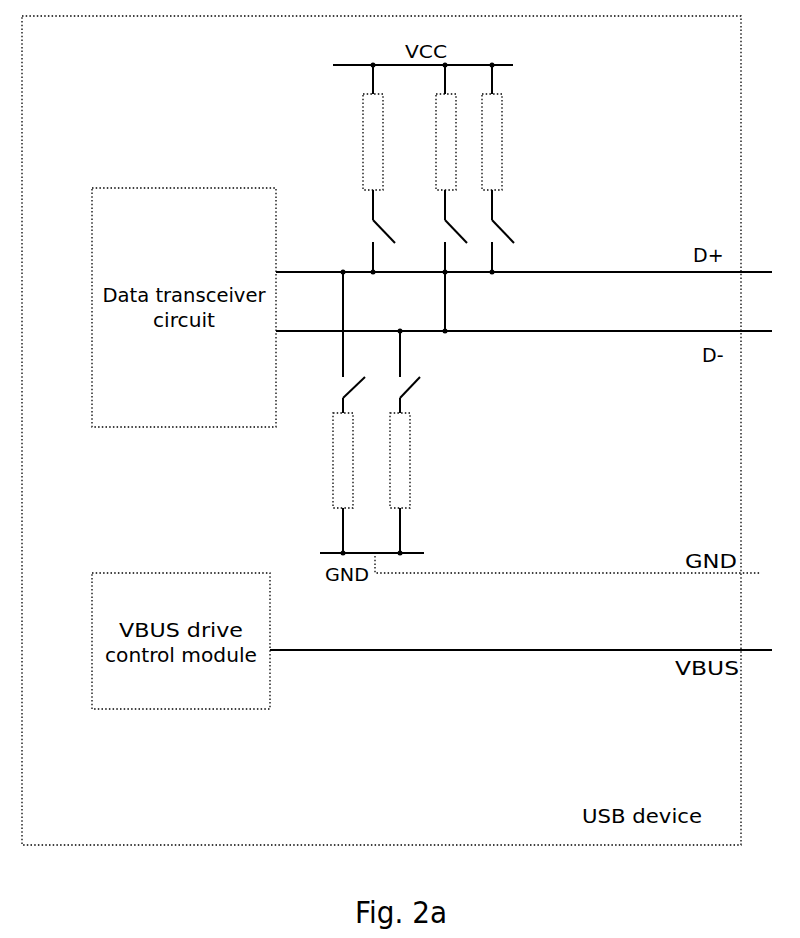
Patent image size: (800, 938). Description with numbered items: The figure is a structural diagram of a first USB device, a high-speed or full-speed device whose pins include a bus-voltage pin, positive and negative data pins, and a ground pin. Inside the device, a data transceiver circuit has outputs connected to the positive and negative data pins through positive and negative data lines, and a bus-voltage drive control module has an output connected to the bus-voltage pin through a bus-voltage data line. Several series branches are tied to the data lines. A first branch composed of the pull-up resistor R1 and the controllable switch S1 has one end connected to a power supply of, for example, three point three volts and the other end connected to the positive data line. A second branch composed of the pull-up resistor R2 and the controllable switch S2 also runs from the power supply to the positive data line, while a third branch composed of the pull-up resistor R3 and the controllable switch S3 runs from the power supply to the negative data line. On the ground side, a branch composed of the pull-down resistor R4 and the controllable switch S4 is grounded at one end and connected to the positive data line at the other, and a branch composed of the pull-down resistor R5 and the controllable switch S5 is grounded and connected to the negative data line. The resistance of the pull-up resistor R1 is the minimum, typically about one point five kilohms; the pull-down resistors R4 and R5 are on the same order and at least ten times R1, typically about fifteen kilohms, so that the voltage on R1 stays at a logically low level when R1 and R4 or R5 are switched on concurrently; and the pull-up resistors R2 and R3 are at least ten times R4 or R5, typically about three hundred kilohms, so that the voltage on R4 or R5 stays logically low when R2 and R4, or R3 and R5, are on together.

The pull-up resistor R1 is at (355, 127).
The pull-up resistor R2 is at (510, 127).
The pull-up resistor R3 is at (429, 127).
The pull-down resistor R4 is at (325, 484).
The pull-down resistor R5 is at (422, 484).
The controllable switch S1 is at (364, 232).
The controllable switch S2 is at (517, 232).
The controllable switch S3 is at (442, 262).
The controllable switch S4 is at (335, 342).
The controllable switch S5 is at (429, 371).